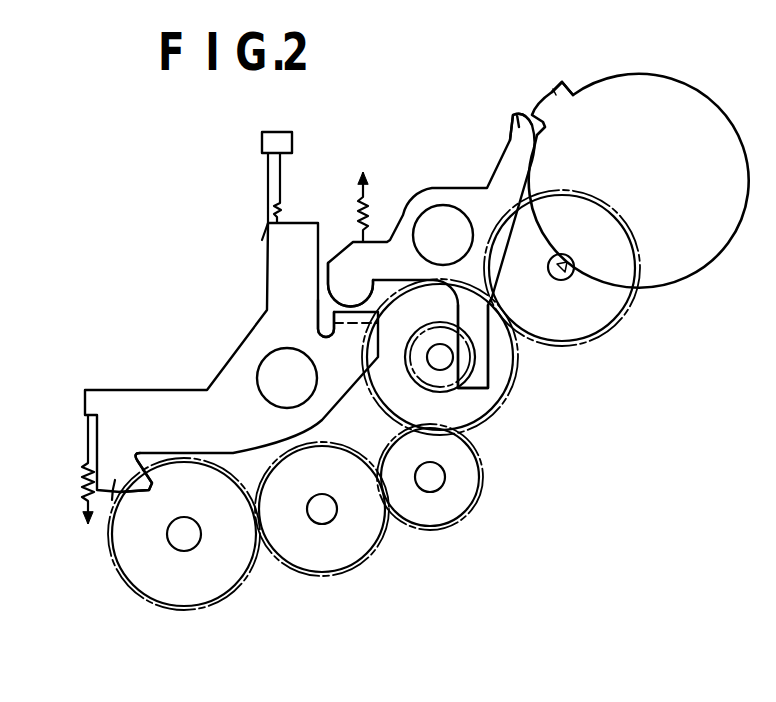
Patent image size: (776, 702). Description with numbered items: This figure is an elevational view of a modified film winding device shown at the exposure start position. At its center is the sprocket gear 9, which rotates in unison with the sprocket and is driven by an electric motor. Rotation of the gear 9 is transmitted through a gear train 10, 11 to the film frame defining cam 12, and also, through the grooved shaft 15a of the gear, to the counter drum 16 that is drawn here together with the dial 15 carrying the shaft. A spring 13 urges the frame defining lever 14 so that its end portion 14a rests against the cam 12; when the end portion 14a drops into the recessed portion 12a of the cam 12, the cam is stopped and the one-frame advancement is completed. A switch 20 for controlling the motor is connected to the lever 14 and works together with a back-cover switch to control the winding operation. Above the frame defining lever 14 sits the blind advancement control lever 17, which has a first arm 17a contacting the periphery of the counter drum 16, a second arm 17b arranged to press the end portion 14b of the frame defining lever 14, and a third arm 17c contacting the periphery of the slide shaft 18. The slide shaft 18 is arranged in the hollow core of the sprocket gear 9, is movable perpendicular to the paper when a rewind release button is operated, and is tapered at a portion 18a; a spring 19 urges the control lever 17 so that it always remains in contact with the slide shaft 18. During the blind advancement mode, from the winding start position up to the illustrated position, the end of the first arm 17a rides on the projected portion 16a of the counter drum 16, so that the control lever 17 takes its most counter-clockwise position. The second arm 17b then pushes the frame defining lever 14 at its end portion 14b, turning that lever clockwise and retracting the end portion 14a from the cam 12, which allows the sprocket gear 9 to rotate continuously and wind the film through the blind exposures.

The gear 9 is at (543, 398).
The gear train gear 10 is at (453, 558).
The gear train gear 11 is at (348, 605).
The film frame defining cam 12 is at (218, 628).
The recessed portion 12a is at (120, 493).
The spring 13 is at (82, 485).
The frame defining lever 14 is at (134, 400).
The end portion 14a is at (127, 478).
The end portion 14b is at (333, 320).
The dial 15 is at (596, 373).
The grooved shaft 15a is at (633, 333).
The counter drum 16 is at (743, 290).
The projected portion 16a is at (552, 92).
The blind advancement control lever 17 is at (433, 197).
The first arm 17a is at (520, 127).
The second arm 17b is at (352, 290).
The third arm 17c is at (530, 368).
The slide shaft 18 is at (512, 422).
The tapered portion 18a is at (492, 443).
The spring 19 is at (365, 182).
The switch 20 is at (288, 143).